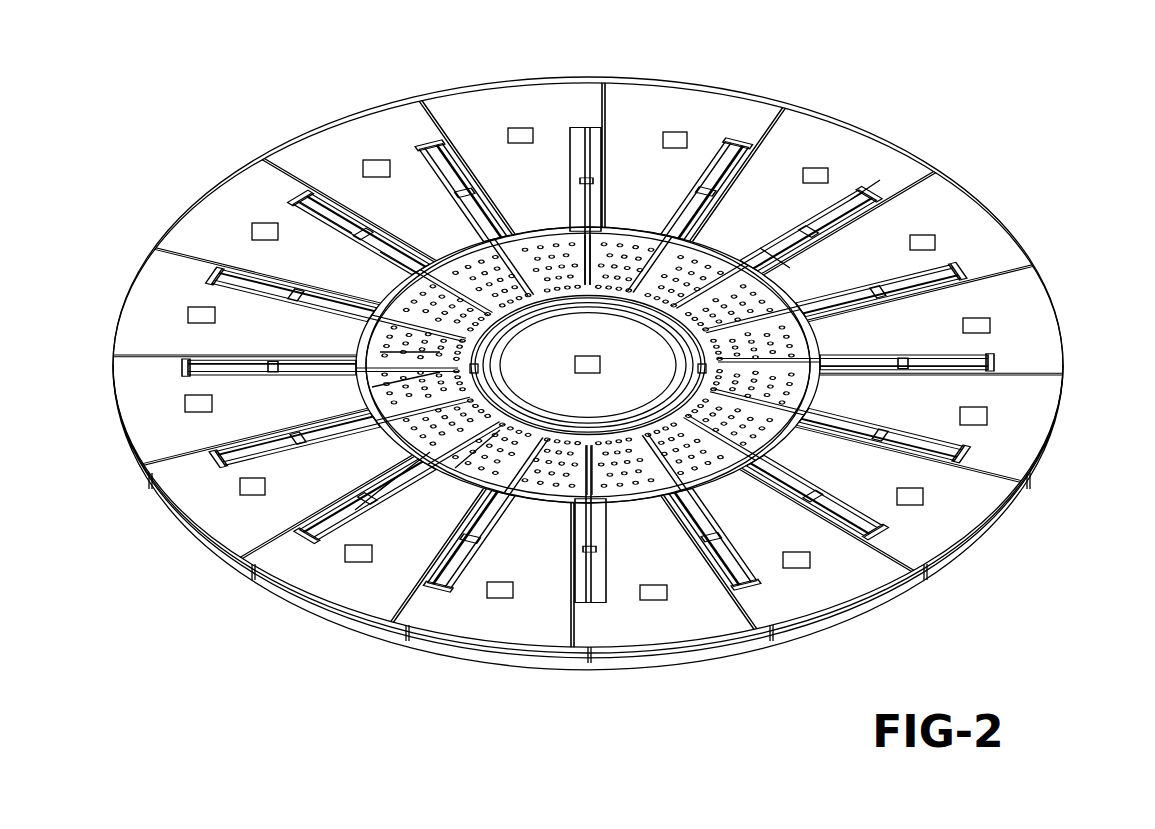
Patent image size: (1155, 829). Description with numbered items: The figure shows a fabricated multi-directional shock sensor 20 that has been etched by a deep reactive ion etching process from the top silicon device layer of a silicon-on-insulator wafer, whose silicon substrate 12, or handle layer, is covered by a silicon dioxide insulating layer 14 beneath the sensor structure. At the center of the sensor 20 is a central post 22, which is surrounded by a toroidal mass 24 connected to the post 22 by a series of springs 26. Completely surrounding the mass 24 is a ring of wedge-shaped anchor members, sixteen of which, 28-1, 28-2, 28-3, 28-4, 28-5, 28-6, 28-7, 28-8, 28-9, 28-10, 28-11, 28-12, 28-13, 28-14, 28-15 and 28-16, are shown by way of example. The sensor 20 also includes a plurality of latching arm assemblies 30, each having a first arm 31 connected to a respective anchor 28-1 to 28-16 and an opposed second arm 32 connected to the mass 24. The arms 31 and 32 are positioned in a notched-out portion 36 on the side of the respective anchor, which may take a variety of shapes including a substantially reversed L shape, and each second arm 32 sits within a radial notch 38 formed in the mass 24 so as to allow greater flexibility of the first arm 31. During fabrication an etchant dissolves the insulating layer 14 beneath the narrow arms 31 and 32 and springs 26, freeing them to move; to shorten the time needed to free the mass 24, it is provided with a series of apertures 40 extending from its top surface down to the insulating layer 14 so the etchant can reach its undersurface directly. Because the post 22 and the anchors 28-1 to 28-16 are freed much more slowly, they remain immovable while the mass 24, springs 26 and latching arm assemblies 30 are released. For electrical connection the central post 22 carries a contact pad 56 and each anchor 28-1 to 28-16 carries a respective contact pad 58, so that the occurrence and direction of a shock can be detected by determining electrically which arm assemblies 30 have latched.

The silicon substrate 12 is at (928, 582).
The insulating layer 14 is at (968, 548).
The sensor 20 is at (935, 97).
The central post 22 is at (618, 379).
The toroidal mass 24 is at (607, 283).
The springs 26 is at (745, 302).
The anchor member 28-1 is at (647, 104).
The anchor member 28-2 is at (805, 140).
The anchor member 28-3 is at (945, 210).
The anchor member 28-4 is at (1035, 320).
The anchor member 28-5 is at (1010, 455).
The anchor member 28-6 is at (965, 510).
The anchor member 28-7 is at (826, 587).
The anchor member 28-8 is at (684, 623).
The anchor member 28-9 is at (508, 618).
The anchor member 28-10 is at (405, 596).
The anchor member 28-11 is at (195, 500).
The anchor member 28-12 is at (125, 392).
The anchor member 28-13 is at (122, 335).
The anchor member 28-14 is at (225, 200).
The anchor member 28-15 is at (320, 140).
The anchor member 28-16 is at (547, 104).
The latching arm assembly 30 is at (827, 250).
The first arm 31 is at (336, 222).
The second arm 32 is at (392, 263).
The notched-out portion 36 is at (578, 186).
The radial notch 38 is at (585, 265).
The apertures 40 is at (400, 352).
The contact pad 56 is at (585, 362).
The contact pad 58 is at (520, 133).